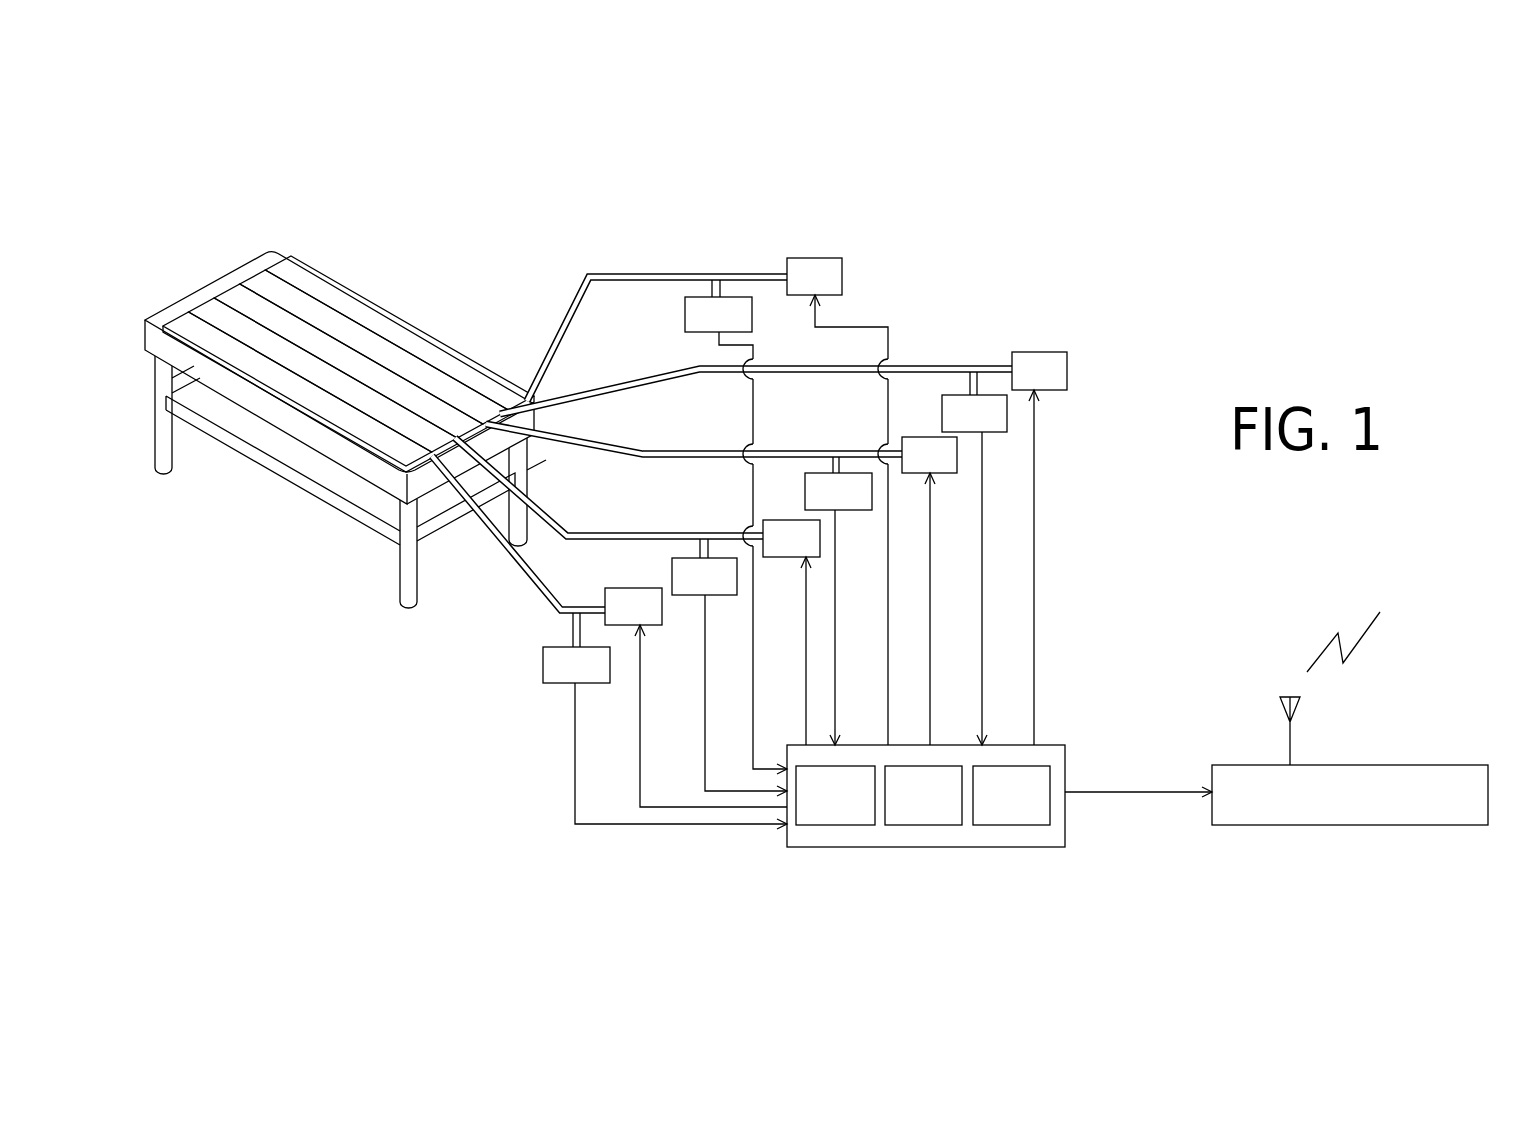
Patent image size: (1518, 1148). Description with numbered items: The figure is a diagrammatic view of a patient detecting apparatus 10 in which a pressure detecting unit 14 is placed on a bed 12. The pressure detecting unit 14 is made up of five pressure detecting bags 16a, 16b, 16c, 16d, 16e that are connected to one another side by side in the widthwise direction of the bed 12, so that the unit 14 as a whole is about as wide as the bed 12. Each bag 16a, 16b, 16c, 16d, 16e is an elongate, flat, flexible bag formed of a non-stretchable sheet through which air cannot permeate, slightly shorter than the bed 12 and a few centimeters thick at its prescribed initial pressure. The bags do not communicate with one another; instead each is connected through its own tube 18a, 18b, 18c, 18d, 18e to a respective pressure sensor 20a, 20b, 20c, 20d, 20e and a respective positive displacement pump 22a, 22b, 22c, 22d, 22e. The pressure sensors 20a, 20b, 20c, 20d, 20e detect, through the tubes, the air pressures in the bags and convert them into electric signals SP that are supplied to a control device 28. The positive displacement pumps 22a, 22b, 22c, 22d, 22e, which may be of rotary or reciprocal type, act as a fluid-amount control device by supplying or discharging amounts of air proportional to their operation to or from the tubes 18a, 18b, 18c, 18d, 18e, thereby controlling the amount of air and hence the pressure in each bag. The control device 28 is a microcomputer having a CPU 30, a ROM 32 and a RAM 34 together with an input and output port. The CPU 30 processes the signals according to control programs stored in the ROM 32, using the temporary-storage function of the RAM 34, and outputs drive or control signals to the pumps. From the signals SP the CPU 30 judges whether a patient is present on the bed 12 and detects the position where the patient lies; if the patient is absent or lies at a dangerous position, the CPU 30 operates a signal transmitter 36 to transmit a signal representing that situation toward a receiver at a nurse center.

The patient detecting apparatus 10 is at (1068, 212).
The bed 12 is at (266, 254).
The pressure detecting unit 14 is at (362, 230).
The pressure detecting bag 16a is at (360, 299).
The pressure detecting bag 16b is at (302, 298).
The pressure detecting bag 16c is at (240, 295).
The pressure detecting bag 16d is at (369, 438).
The pressure detecting bag 16e is at (410, 431).
The tube 18a is at (603, 272).
The tube 18b is at (587, 392).
The tube 18c is at (617, 449).
The tube 18d is at (560, 527).
The tube 18e is at (521, 570).
The pressure sensor 20a is at (752, 319).
The pressure sensor 20b is at (957, 400).
The pressure sensor 20c is at (822, 478).
The pressure sensor 20d is at (690, 560).
The pressure sensor 20e is at (548, 668).
The positive displacement pump 22a is at (833, 262).
The positive displacement pump 22b is at (1052, 358).
The positive displacement pump 22c is at (932, 475).
The positive displacement pump 22d is at (776, 558).
The positive displacement pump 22e is at (655, 621).
The control device 28 is at (876, 882).
The CPU 30 is at (822, 818).
The ROM 32 is at (918, 818).
The RAM 34 is at (1028, 818).
The signal transmitter 36 is at (1347, 826).